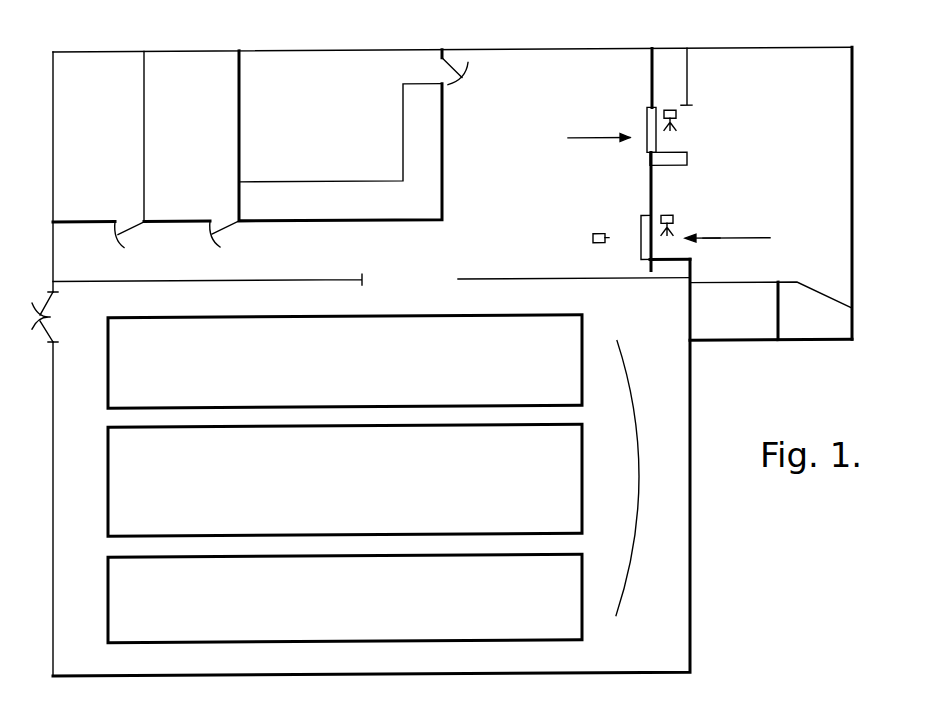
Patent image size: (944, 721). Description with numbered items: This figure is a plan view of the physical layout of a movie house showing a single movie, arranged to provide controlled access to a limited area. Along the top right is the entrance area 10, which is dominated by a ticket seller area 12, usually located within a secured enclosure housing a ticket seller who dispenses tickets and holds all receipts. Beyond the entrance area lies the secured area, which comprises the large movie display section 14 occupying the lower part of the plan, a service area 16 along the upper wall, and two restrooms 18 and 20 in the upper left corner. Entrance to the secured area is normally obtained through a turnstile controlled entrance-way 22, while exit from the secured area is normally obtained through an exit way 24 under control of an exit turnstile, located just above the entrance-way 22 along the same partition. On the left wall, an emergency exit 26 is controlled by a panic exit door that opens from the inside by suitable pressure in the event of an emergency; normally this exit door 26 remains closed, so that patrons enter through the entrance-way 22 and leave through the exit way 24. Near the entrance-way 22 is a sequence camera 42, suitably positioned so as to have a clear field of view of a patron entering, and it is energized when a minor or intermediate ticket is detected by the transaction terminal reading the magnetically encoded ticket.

The entrance area 10 is at (833, 115).
The ticket seller area 12 is at (768, 348).
The movie display section 14 is at (673, 649).
The service area 16 is at (325, 68).
The restroom 18 is at (113, 68).
The restroom 20 is at (201, 68).
The turnstile controlled entrance-way 22 is at (638, 227).
The exit way 24 is at (682, 139).
The emergency exit 26 is at (42, 292).
The sequence camera 42 is at (595, 240).